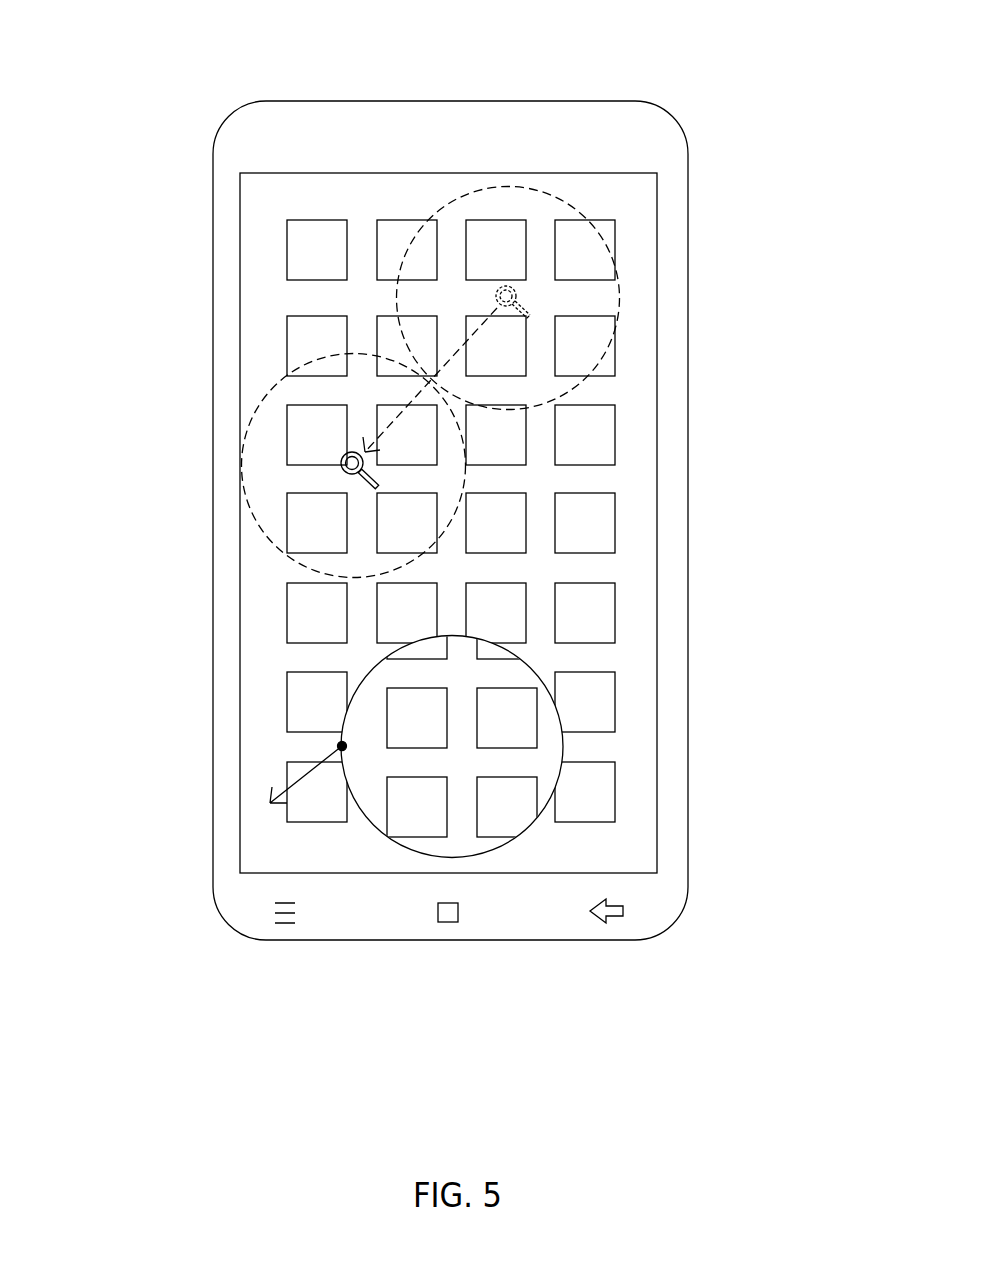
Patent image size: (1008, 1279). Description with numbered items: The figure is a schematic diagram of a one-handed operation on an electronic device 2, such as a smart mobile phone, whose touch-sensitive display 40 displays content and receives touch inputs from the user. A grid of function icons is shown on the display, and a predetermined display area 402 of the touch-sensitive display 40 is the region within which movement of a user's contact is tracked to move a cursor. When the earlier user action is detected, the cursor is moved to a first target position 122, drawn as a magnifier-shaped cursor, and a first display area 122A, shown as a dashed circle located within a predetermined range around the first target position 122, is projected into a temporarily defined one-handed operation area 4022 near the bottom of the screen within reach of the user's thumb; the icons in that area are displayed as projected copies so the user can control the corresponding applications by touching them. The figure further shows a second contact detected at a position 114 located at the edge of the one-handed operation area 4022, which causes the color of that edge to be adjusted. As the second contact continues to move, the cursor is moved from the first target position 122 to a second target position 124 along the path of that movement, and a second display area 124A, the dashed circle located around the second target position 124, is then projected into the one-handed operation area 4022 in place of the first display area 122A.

The electronic device 2 is at (460, 90).
The touch-sensitive display 40 is at (555, 135).
The predetermined display area 402 is at (633, 218).
The one-handed operation area 4022 is at (515, 673).
The first target position 122 is at (503, 288).
The first display area 122A is at (613, 302).
The second target position 124 is at (353, 453).
The second display area 124A is at (265, 500).
The position of second contact 114 is at (342, 741).